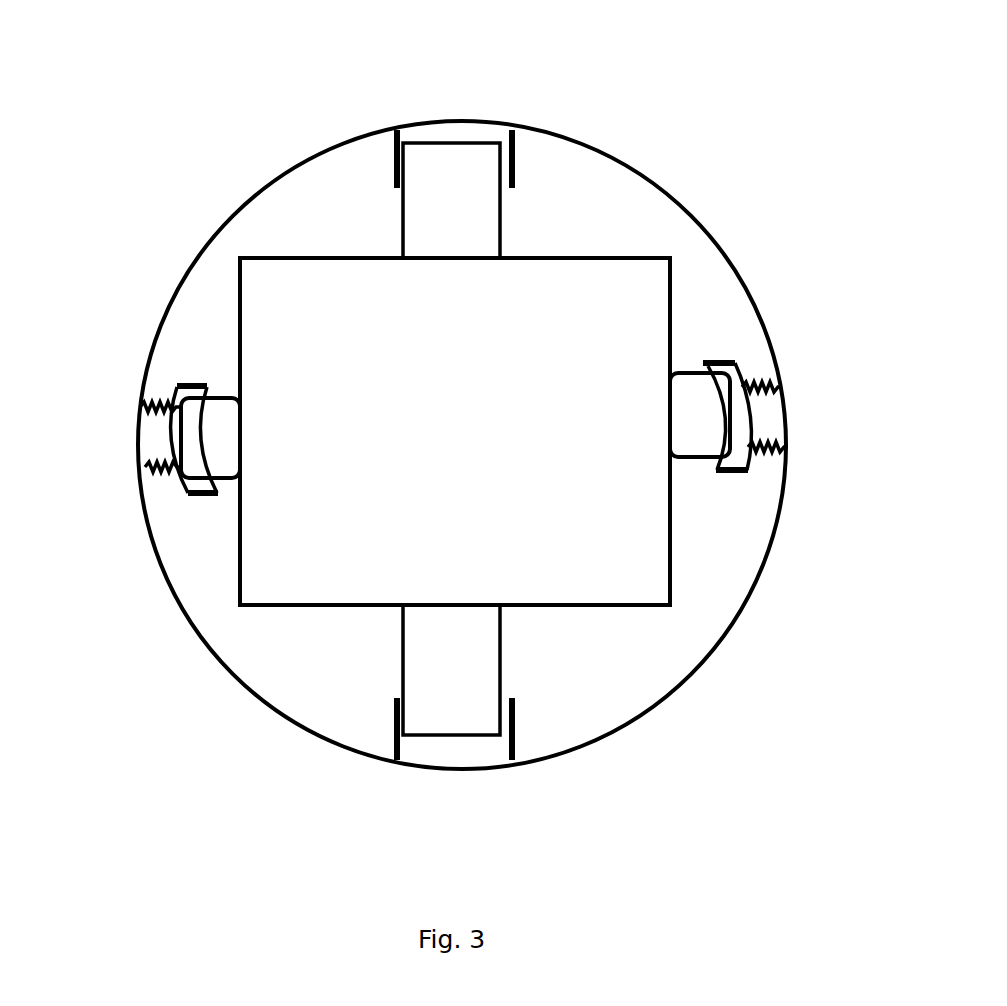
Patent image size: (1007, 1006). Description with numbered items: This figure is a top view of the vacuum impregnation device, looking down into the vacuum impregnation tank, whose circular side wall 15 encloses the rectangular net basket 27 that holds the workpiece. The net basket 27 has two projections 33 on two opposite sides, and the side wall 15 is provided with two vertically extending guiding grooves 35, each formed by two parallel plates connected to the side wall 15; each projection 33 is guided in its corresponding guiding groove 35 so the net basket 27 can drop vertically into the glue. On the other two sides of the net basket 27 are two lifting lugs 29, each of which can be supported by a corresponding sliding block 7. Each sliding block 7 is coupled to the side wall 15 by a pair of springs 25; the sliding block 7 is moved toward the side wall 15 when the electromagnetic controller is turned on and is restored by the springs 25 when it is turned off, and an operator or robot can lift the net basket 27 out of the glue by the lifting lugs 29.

The side wall 15 is at (700, 670).
The net basket 27 is at (585, 515).
The projection 33 is at (445, 175).
The guiding groove 35 is at (483, 140).
The lifting lug 29 is at (225, 407).
The sliding block 7 is at (192, 377).
The spring 25 is at (157, 398).